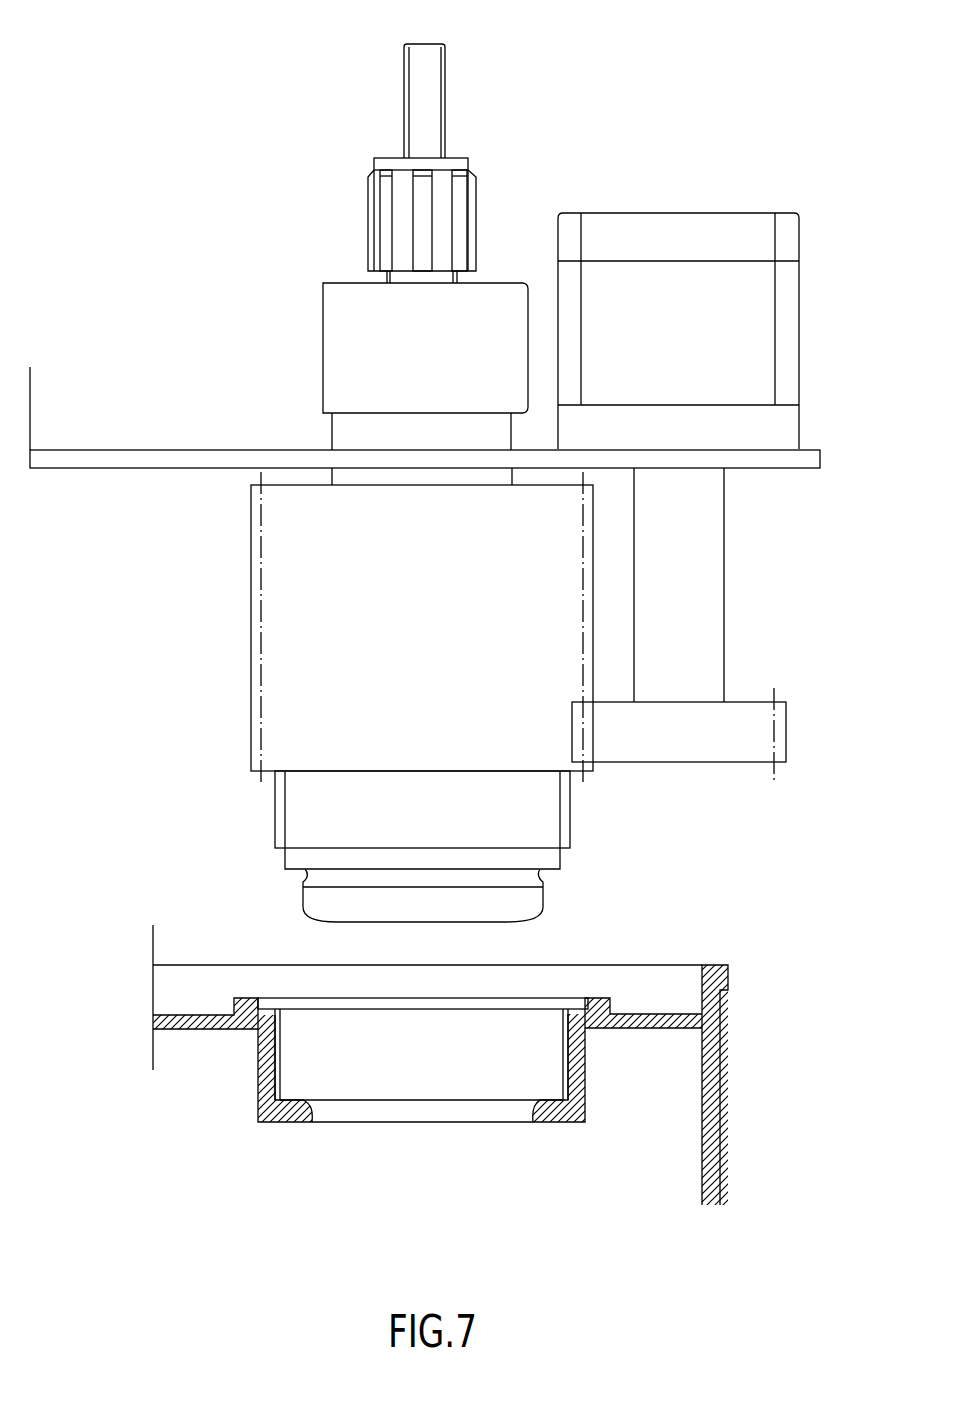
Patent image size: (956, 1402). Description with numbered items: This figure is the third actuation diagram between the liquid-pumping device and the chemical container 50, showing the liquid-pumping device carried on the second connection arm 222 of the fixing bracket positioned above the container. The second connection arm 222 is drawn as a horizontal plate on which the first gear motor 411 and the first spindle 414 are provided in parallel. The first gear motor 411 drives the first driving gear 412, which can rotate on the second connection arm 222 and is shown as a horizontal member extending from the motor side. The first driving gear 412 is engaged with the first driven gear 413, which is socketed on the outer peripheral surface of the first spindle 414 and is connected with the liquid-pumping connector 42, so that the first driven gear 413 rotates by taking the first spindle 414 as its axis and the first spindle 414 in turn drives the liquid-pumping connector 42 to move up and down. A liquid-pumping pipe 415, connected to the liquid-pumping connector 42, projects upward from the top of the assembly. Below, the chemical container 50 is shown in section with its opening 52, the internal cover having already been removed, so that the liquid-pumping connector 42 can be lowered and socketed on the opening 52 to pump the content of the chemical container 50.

The liquid-pumping pipe 415 is at (407, 100).
The first gear motor 411 is at (655, 283).
The second connection arm 222 is at (124, 460).
The first spindle 414 is at (380, 440).
The first driven gear 413 is at (316, 698).
The first driving gear 412 is at (735, 727).
The liquid-pumping connector 42 is at (375, 905).
The chemical container 50 is at (720, 1077).
The opening 52 is at (427, 1112).